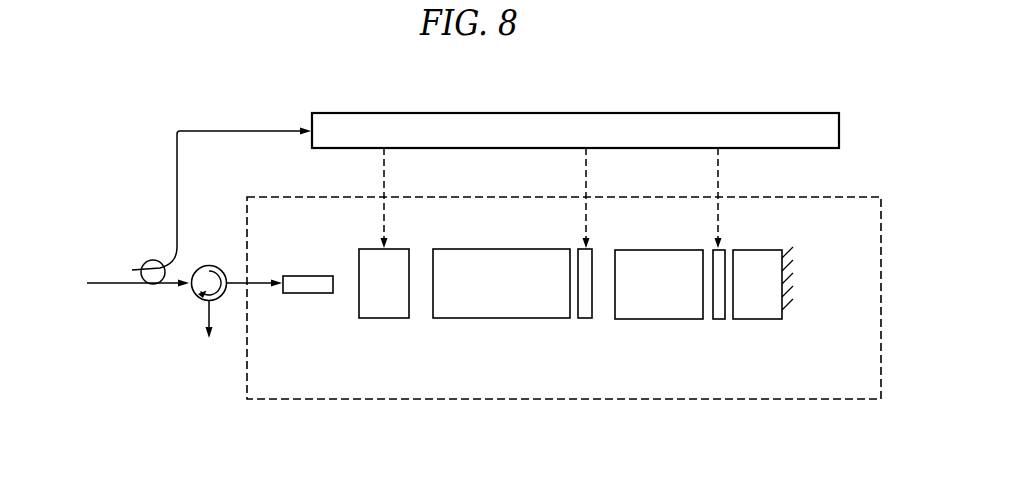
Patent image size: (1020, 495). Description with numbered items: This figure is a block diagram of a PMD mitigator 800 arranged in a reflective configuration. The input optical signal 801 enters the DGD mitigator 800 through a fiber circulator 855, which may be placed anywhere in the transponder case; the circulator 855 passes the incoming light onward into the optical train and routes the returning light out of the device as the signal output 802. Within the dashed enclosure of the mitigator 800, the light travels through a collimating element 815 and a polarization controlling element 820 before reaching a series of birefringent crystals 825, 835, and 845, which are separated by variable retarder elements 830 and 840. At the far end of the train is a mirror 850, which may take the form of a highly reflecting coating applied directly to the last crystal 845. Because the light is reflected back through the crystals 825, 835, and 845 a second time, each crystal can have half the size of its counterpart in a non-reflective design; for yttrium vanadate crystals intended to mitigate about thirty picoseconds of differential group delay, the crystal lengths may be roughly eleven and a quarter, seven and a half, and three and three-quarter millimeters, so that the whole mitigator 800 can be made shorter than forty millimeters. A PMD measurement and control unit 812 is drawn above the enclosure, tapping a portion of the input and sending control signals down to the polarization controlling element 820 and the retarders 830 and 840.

The PMD mitigator 800 is at (762, 93).
The input optical signal 801 is at (117, 282).
The signal output 802 is at (210, 313).
The PMD measurement and control unit 812 is at (840, 132).
The collimator 815 is at (285, 292).
The polarization controller 820 is at (373, 319).
The crystal 825 is at (487, 319).
The variable retarder 830 is at (588, 319).
The crystal 835 is at (632, 320).
The variable retarder 840 is at (720, 320).
The crystal 845 is at (759, 320).
The mirror 850 is at (797, 280).
The fiber circulator 855 is at (210, 263).